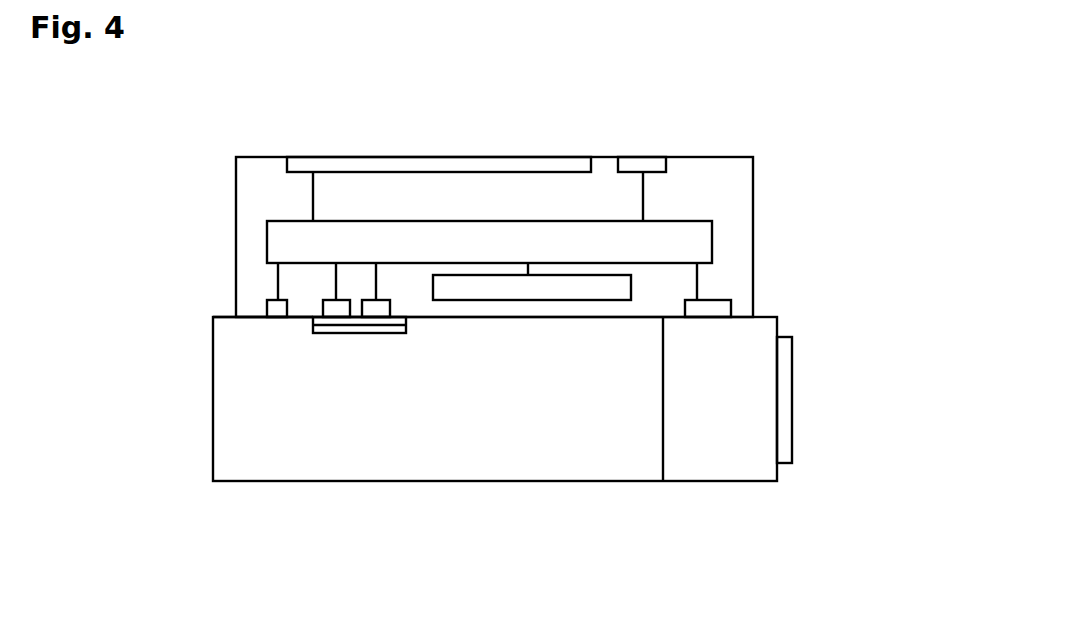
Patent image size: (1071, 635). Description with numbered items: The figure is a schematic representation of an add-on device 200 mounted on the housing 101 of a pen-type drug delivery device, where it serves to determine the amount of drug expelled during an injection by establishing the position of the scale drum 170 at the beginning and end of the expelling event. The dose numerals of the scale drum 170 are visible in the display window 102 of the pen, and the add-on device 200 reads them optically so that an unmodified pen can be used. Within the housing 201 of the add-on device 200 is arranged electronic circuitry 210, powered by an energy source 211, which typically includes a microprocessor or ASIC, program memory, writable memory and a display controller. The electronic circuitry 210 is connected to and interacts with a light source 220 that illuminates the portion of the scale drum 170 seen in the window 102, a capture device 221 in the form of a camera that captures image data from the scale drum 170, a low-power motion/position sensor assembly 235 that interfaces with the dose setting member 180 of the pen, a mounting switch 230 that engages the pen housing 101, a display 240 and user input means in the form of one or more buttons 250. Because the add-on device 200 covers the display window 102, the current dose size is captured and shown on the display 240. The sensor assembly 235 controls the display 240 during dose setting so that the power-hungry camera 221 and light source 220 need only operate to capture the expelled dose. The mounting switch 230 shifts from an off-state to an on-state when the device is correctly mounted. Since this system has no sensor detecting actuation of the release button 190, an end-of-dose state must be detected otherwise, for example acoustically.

The housing 101 is at (553, 481).
The display window 102 is at (313, 320).
The scale drum 170 is at (315, 329).
The dose setting member 180 is at (711, 470).
The release button 190 is at (785, 405).
The add-on device 200 is at (226, 170).
The housing 201 is at (692, 185).
The electronic circuitry 210 is at (278, 241).
The energy source 211 is at (622, 284).
The light source 220 is at (337, 310).
The capture device 221 is at (376, 310).
The mounting switch 230 is at (267, 306).
The low-power motion/position sensor assembly 235 is at (716, 306).
The display 240 is at (353, 163).
The buttons 250 is at (637, 163).